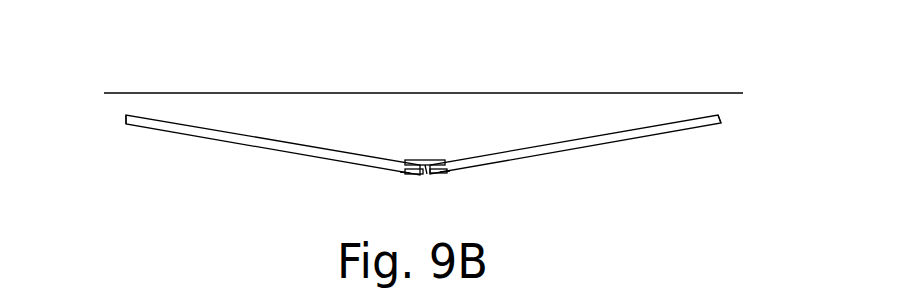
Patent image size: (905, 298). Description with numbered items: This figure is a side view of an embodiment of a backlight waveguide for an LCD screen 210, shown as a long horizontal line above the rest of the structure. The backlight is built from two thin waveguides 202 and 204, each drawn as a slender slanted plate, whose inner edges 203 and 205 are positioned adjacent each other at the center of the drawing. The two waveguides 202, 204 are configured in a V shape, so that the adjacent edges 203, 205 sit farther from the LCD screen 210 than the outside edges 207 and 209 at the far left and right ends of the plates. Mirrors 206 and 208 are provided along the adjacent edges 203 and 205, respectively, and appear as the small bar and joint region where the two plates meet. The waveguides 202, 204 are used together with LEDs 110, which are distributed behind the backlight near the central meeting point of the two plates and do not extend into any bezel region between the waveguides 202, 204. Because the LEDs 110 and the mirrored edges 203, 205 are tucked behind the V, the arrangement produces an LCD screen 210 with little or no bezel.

The LEDs 110 is at (405, 172).
The waveguide 202 is at (246, 146).
The edge 203 is at (420, 175).
The waveguide 204 is at (610, 143).
The edge 205 is at (430, 175).
The mirror 206 is at (413, 160).
The outside edge 207 is at (126, 123).
The mirror 208 is at (433, 162).
The outside edge 209 is at (721, 119).
The LCD screen 210 is at (688, 93).